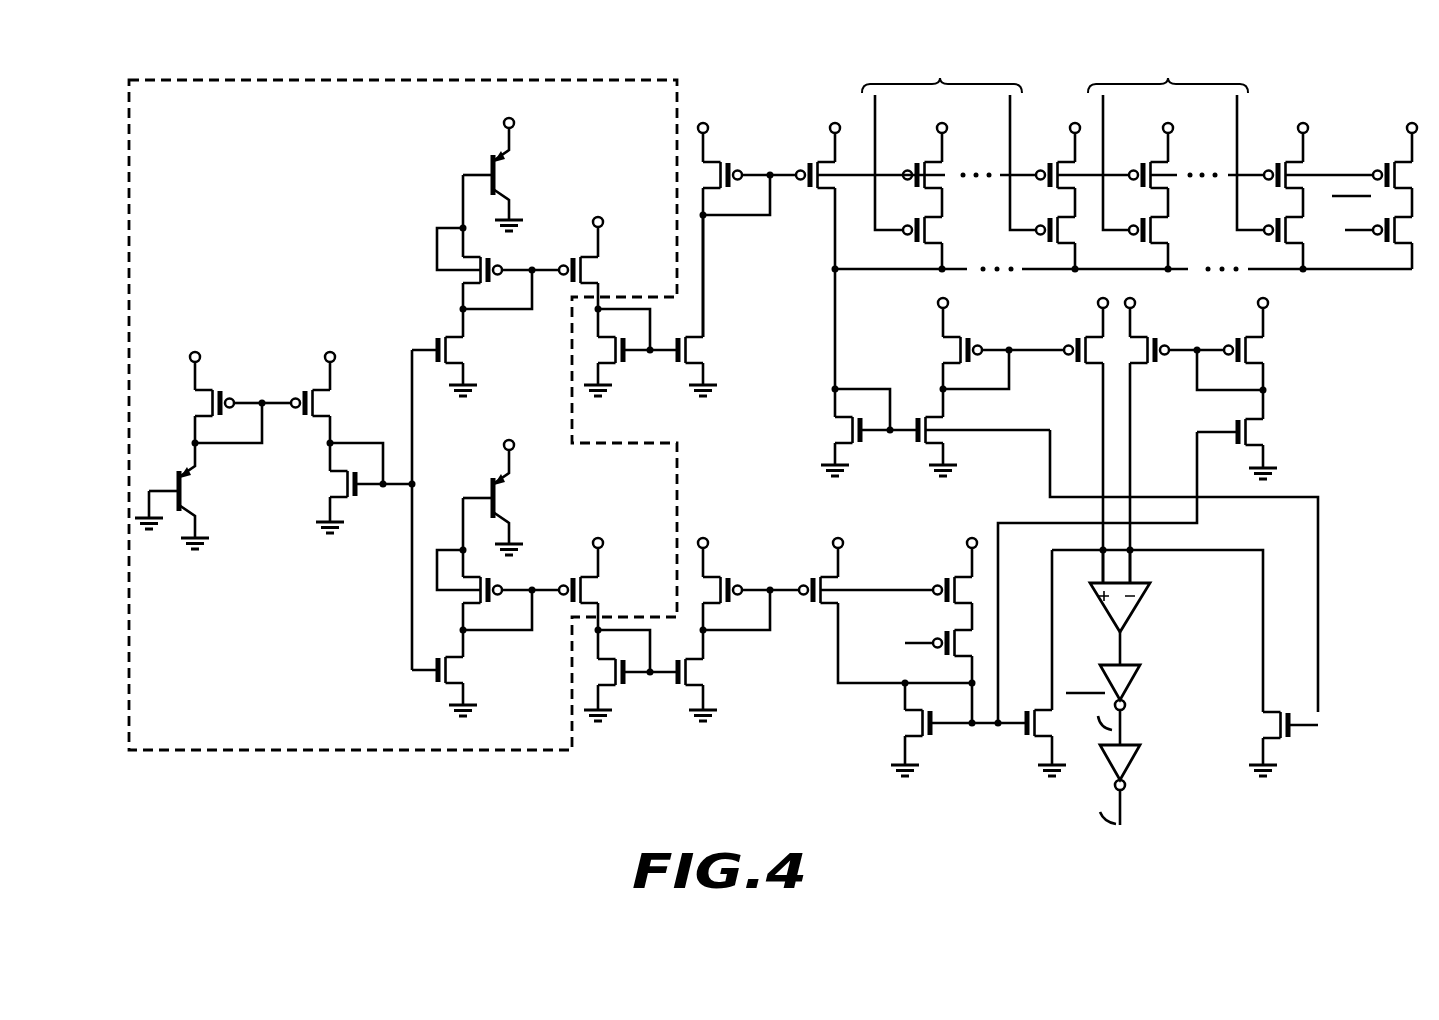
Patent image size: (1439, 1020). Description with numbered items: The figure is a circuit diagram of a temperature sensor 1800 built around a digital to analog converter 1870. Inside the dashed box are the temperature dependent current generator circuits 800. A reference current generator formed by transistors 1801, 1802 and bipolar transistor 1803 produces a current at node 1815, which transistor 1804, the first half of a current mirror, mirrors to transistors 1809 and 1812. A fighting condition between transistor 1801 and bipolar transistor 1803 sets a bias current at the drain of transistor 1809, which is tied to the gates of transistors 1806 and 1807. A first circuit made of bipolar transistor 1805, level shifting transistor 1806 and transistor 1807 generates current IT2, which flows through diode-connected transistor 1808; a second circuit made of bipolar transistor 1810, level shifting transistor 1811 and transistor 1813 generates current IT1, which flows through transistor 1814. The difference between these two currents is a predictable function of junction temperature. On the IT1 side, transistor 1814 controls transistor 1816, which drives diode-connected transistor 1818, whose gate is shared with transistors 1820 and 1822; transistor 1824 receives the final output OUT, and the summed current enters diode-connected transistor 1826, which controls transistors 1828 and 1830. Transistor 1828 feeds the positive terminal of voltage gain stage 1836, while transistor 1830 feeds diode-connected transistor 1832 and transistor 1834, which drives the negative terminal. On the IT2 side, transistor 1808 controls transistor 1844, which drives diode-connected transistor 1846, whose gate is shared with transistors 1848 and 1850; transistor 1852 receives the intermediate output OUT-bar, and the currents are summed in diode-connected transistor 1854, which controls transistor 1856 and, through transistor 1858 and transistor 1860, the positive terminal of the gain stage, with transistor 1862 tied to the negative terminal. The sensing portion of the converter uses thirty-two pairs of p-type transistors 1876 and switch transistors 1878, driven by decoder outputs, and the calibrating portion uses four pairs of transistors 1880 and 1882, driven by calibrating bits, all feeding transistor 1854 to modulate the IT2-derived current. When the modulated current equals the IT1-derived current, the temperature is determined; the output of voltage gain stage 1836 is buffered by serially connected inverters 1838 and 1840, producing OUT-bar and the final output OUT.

The temperature dependent current generator circuits 800 is at (226, 753).
The temperature sensor 1800 is at (571, 820).
The transistor 1801 is at (208, 403).
The transistor 1802 is at (316, 403).
The bipolar transistor 1803 is at (176, 472).
The transistor 1804 is at (357, 498).
The bipolar transistor 1805 is at (486, 166).
The level shifting transistor 1806 is at (474, 275).
The transistor 1807 is at (585, 272).
The transistor 1808 is at (620, 364).
The transistor 1809 is at (450, 352).
The bipolar transistor 1810 is at (491, 482).
The level shifting transistor 1811 is at (477, 594).
The transistor 1812 is at (455, 672).
The transistor 1813 is at (585, 592).
The n-type transistor 1814 is at (620, 686).
The node 1815 is at (325, 444).
The n-type transistor 1816 is at (697, 674).
The p-type transistor 1818 is at (730, 576).
The p-type transistor 1820 is at (815, 604).
The p-type transistor 1822 is at (942, 577).
The p-type transistor 1824 is at (942, 657).
The n-type transistor 1826 is at (930, 737).
The n-type transistor 1828 is at (1026, 712).
The n-type transistor 1830 is at (1258, 433).
The p-type transistor 1832 is at (1250, 352).
The p-type transistor 1834 is at (1157, 364).
The voltage gain stage 1836 is at (1143, 606).
The inverter 1838 is at (1137, 682).
The inverter 1840 is at (1137, 762).
The n-type transistor 1844 is at (703, 352).
The p-type transistor 1846 is at (730, 162).
The p-type transistor 1848 is at (810, 190).
The p-type transistor 1850 is at (1382, 163).
The p-type transistor 1852 is at (1387, 245).
The n-type transistor 1854 is at (846, 428).
The n-type transistor 1856 is at (937, 425).
The p-type transistor 1858 is at (952, 350).
The p-type transistor 1860 is at (1080, 364).
The transistor 1862 is at (1276, 723).
The digital to analog converter 1870 is at (1343, 80).
The p-type transistor 1876 is at (935, 181).
The transistor 1878 is at (935, 225).
The p-type transistor 1880 is at (1163, 181).
The transistor 1882 is at (1160, 225).